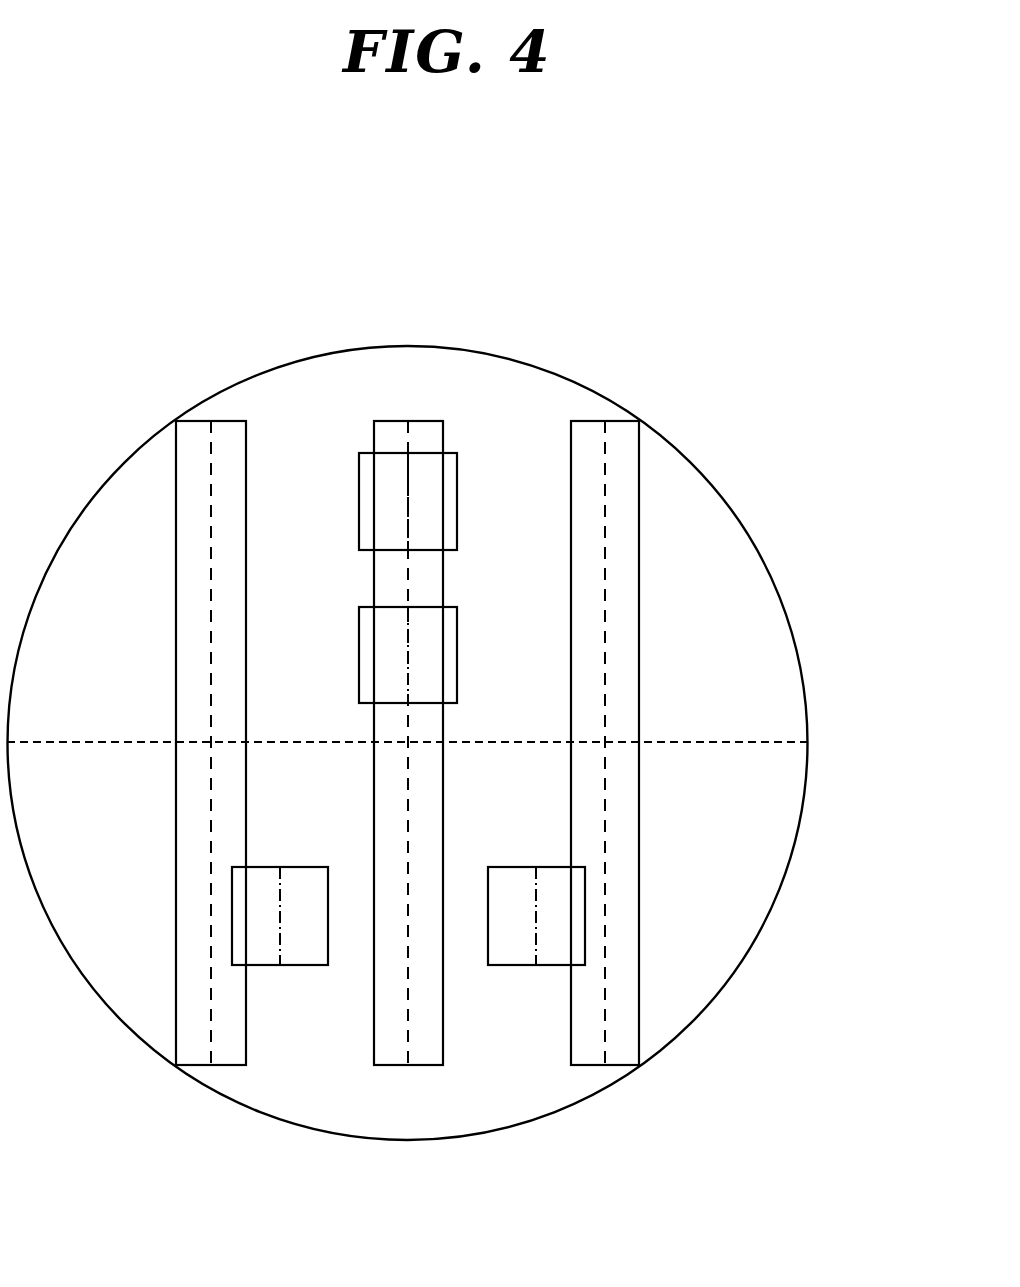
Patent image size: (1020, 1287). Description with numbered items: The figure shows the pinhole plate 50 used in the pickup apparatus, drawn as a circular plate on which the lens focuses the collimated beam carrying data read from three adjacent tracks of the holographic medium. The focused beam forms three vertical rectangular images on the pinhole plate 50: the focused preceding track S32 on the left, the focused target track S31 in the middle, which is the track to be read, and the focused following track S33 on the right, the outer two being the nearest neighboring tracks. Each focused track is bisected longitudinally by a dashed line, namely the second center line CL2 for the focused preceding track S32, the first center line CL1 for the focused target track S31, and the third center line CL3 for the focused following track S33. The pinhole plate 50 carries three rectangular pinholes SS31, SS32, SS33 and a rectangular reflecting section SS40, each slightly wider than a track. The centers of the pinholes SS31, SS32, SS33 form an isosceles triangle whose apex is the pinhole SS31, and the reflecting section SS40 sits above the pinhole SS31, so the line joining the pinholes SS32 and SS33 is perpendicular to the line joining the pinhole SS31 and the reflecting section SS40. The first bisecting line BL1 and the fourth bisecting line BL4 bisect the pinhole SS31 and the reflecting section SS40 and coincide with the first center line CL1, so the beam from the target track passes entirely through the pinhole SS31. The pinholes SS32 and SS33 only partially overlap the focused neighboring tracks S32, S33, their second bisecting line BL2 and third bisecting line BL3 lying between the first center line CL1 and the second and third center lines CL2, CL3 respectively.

The pinhole plate 50 is at (762, 411).
The focused nth track S31 is at (383, 421).
The focused (n−1)th track S32 is at (210, 421).
The focused (n+1)th track S33 is at (603, 421).
The reflecting section SS40 is at (457, 500).
The pinhole SS31 is at (457, 653).
The pinhole SS32 is at (305, 867).
The pinhole SS33 is at (520, 867).
The first bisecting line BL1 is at (408, 678).
The second bisecting line BL2 is at (280, 920).
The third bisecting line BL3 is at (536, 920).
The fourth bisecting line BL4 is at (408, 523).
The first center line CL1 is at (408, 1038).
The second center line CL2 is at (211, 1038).
The third center line CL3 is at (605, 1038).